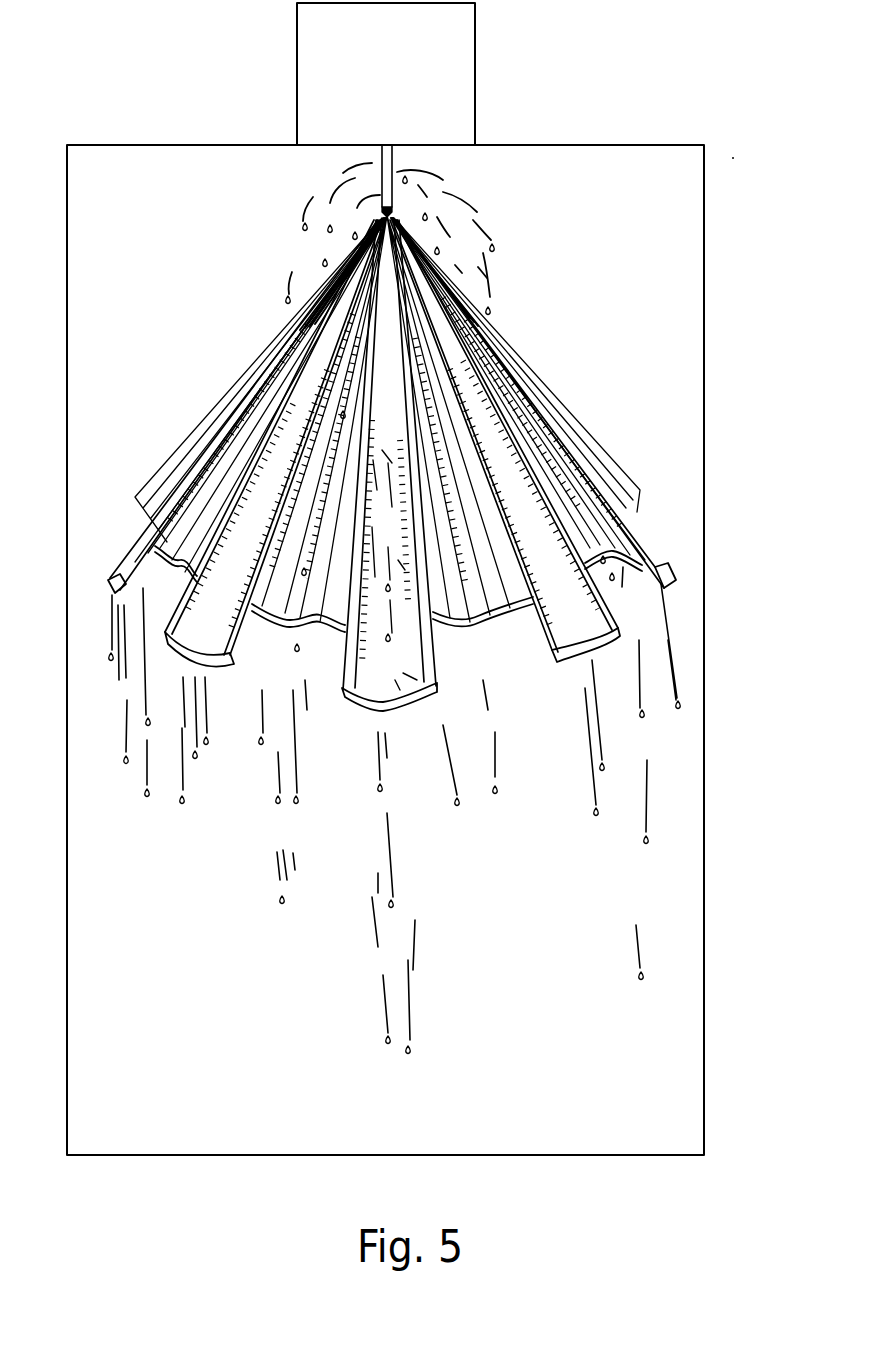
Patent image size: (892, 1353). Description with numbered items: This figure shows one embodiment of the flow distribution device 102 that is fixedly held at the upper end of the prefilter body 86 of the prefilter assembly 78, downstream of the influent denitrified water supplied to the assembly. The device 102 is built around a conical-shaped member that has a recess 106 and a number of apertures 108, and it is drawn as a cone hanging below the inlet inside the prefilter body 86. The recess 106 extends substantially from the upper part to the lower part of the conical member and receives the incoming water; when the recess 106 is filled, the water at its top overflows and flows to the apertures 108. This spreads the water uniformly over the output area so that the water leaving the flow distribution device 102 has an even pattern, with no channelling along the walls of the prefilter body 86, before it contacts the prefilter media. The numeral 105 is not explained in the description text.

The prefilter assembly 78 is at (199, 123).
The prefilter body 86 is at (577, 144).
The apertures 108 is at (422, 250).
The flow distribution device 102 is at (527, 323).
The recess 106 is at (228, 470).
The skirt rim of spray cone 105 is at (407, 683).